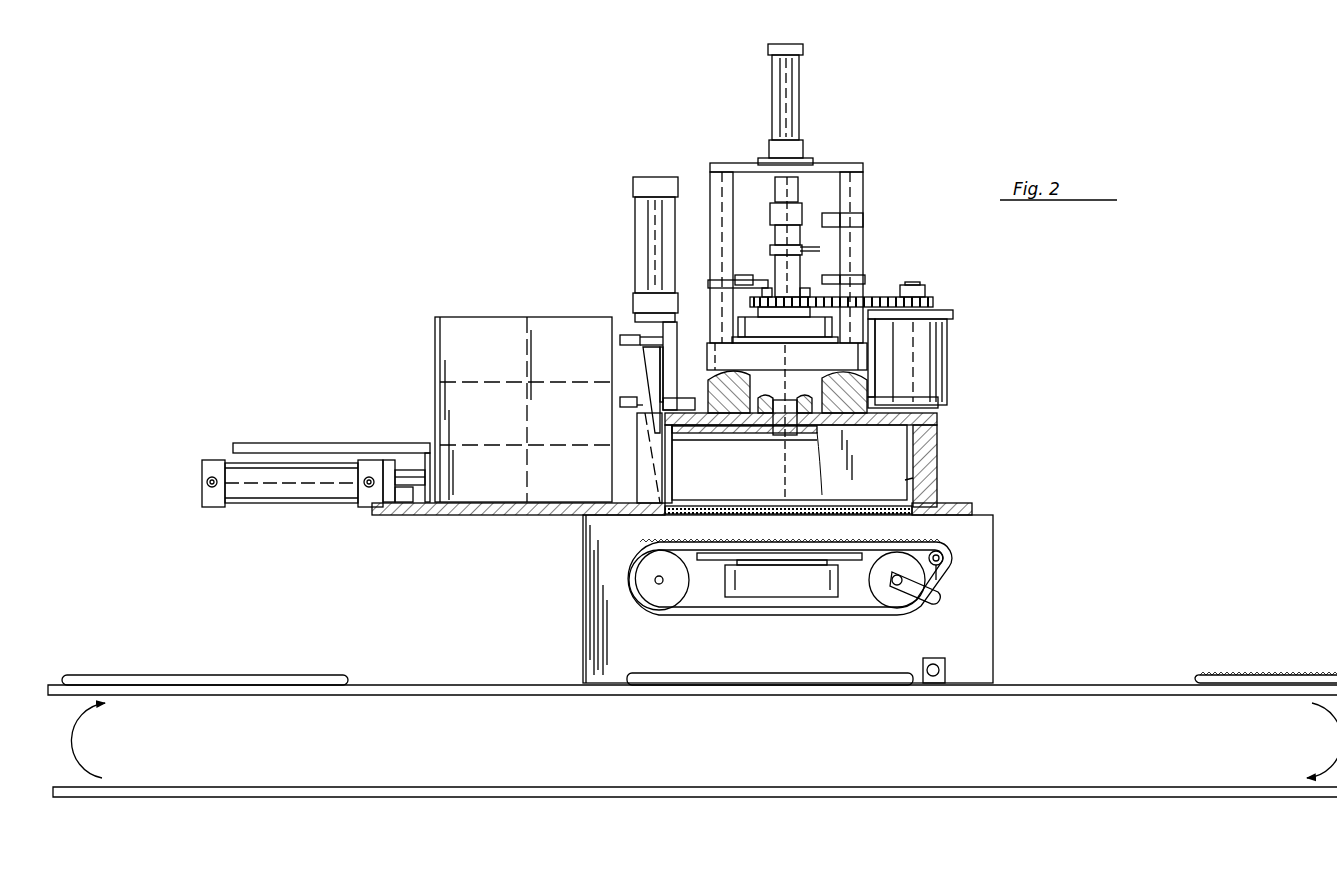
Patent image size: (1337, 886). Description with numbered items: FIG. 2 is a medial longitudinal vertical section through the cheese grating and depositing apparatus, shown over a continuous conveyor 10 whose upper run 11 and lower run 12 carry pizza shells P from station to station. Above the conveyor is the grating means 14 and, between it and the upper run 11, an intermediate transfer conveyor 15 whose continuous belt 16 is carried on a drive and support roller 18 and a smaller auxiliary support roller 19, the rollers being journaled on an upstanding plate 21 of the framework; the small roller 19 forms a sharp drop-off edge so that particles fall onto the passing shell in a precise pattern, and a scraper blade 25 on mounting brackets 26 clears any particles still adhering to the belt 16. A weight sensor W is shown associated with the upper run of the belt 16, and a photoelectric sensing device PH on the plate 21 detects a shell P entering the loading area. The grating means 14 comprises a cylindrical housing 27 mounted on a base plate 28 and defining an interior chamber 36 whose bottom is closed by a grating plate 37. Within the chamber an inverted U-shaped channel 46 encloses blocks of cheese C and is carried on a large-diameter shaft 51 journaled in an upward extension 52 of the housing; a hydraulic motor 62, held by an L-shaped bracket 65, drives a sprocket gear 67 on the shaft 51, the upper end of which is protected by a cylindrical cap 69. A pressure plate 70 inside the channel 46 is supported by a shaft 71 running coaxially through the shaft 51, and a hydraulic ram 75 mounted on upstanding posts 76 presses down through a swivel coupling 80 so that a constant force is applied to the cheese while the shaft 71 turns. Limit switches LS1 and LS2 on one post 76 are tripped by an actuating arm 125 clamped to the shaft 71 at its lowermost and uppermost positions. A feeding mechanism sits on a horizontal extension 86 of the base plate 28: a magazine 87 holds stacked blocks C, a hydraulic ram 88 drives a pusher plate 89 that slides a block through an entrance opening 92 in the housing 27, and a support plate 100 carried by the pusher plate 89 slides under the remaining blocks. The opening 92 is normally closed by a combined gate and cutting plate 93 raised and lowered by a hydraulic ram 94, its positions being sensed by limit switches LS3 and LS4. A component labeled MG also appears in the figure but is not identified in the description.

The continuous conveyor 10 is at (1112, 680).
The upper run 11 is at (428, 684).
The lower run 12 is at (436, 786).
The grating means 14 is at (958, 378).
The intermediate transfer conveyor 15 is at (970, 548).
The continuous belt 16 is at (790, 612).
The drive and support roller 18 is at (888, 597).
The auxiliary support roller 19 is at (662, 598).
The upstanding plate 21 is at (606, 598).
The scraper blade 25 is at (937, 588).
The mounting brackets 26 is at (928, 602).
The housing 27 is at (938, 421).
The base plate 28 is at (968, 512).
The interior cylindrical chamber 36 is at (905, 483).
The grating plate 37 is at (838, 514).
The U-shaped channel 46 is at (895, 465).
The shaft 51 is at (782, 385).
The upward extension 52 is at (715, 353).
The hydraulic motor 62 is at (935, 345).
The L-shaped bracket 65 is at (945, 313).
The sprocket gear 67 is at (885, 297).
The cylindrical cap 69 is at (796, 332).
The pressure plate 70 is at (735, 437).
The shaft 71 is at (780, 236).
The hydraulic ram 75 is at (805, 85).
The upstanding posts 76 is at (715, 185).
The swivel coupling 80 is at (775, 192).
The horizontal extension 86 is at (510, 517).
The magazine 87 is at (432, 347).
The hydraulic ram 88 is at (293, 505).
The pusher plate 89 is at (428, 480).
The entrance opening 92 is at (640, 470).
The gate and cutting plate 93 is at (652, 370).
The hydraulic ram 94 is at (655, 175).
The support plate 100 is at (365, 443).
The actuating arm 125 is at (822, 249).
The food product C is at (518, 335).
The limit switch LS1 is at (830, 272).
The limit switch LS2 is at (830, 220).
The limit switch LS3 is at (620, 340).
The limit switch LS4 is at (620, 402).
The magnet MG is at (745, 278).
The pizza shells P is at (232, 675).
The photoelectric sensing device PH is at (946, 670).
The weight sensor W is at (770, 583).